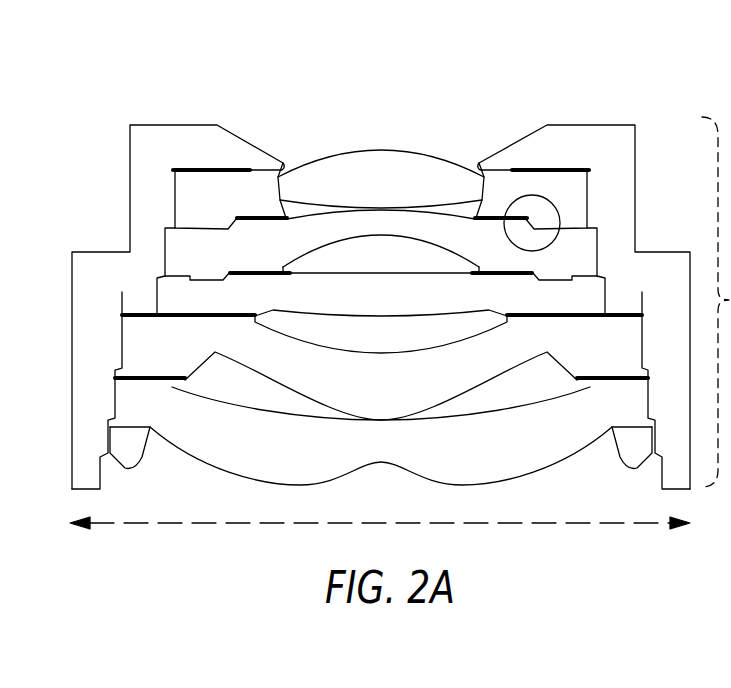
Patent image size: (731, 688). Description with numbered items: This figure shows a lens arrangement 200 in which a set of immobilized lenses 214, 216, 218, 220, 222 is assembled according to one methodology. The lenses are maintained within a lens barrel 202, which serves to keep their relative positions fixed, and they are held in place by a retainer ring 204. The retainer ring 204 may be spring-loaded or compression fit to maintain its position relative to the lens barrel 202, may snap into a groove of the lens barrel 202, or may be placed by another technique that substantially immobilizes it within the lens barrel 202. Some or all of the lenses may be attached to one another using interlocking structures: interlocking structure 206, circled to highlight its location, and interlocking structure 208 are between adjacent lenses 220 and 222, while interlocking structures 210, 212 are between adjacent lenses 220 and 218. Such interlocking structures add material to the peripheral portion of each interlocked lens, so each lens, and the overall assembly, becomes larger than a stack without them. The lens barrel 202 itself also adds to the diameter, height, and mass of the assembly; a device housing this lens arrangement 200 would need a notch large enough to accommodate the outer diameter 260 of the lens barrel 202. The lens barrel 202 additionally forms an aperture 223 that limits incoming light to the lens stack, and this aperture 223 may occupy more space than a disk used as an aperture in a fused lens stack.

The lens arrangement 200 is at (241, 74).
The lens barrel 202 is at (92, 252).
The retainer ring 204 is at (130, 463).
The interlocking structure 206 is at (533, 196).
The interlocking structure 208 is at (228, 218).
The interlocking structure 210 is at (538, 275).
The interlocking structure 212 is at (228, 273).
The lens 214 is at (381, 440).
The lens 216 is at (365, 379).
The lens 218 is at (353, 318).
The lens 220 is at (362, 251).
The lens 222 is at (360, 184).
The aperture 223 is at (480, 165).
The diameter 260 is at (595, 523).